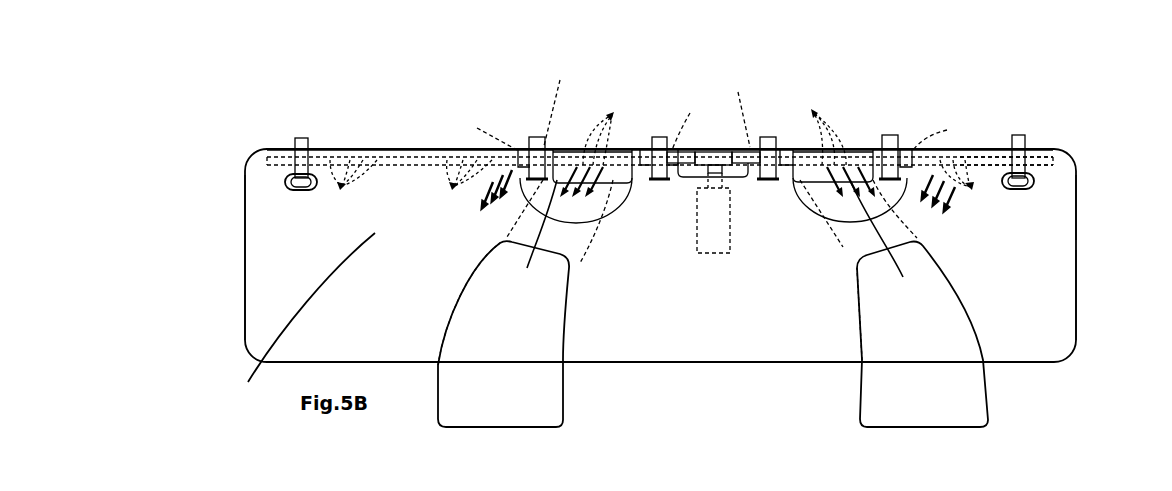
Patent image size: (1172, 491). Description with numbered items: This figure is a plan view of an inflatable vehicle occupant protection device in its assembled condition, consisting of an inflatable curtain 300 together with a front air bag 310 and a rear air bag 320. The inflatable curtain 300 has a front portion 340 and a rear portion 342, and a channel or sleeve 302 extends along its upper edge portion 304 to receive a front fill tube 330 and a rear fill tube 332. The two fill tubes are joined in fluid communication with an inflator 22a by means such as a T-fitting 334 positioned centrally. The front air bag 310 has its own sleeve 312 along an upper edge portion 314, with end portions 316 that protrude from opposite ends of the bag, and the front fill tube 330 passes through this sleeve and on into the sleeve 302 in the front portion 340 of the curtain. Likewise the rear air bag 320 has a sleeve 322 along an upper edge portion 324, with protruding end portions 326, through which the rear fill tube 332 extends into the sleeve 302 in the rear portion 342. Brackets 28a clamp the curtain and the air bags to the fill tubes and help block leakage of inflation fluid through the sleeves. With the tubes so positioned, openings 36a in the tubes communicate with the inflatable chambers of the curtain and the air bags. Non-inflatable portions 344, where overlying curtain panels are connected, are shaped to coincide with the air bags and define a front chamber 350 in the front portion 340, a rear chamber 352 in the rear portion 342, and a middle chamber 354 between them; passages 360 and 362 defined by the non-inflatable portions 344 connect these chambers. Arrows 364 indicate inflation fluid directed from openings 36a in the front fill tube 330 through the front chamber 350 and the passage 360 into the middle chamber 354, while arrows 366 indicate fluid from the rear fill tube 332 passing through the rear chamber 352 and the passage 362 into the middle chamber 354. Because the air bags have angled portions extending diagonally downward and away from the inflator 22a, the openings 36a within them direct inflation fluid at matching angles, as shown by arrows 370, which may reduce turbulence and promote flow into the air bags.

The inflator 22a is at (710, 238).
The brackets 28a is at (302, 142).
The openings 36a is at (659, 153).
The inflatable curtain 300 is at (678, 333).
The sleeve 302 is at (522, 147).
The upper edge portion 304 is at (408, 150).
The front air bag 310 is at (547, 402).
The sleeve 312 is at (565, 104).
The upper edge portion 314 is at (563, 150).
The end portions 316 is at (571, 127).
The rear air bag 320 is at (910, 400).
The sleeve 322 is at (780, 150).
The upper edge portion 324 is at (858, 150).
The end portions 326 is at (848, 113).
The front fill tube 330 is at (404, 168).
The rear fill tube 332 is at (993, 160).
The T-fitting 334 is at (705, 162).
The front portion 340 is at (298, 319).
The rear portion 342 is at (1047, 242).
The non-inflatable portions 344 is at (605, 193).
The front chamber 350 is at (270, 250).
The rear chamber 352 is at (1027, 308).
The middle chamber 354 is at (740, 335).
The passage 360 is at (567, 238).
The passage 362 is at (860, 240).
The arrows 364 is at (485, 215).
The arrows 366 is at (943, 205).
The arrows 370 is at (713, 240).